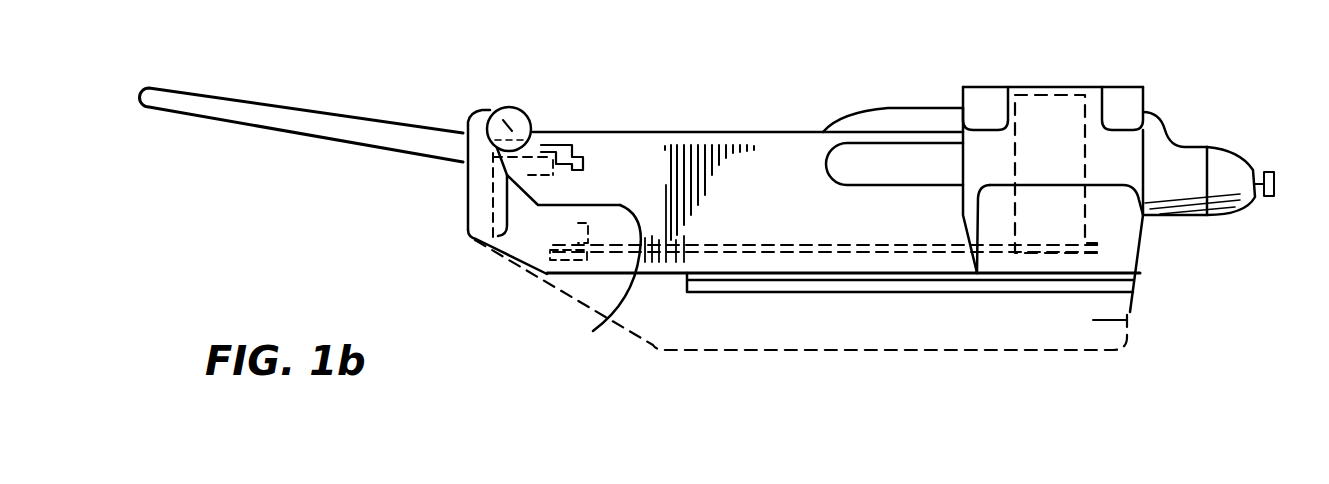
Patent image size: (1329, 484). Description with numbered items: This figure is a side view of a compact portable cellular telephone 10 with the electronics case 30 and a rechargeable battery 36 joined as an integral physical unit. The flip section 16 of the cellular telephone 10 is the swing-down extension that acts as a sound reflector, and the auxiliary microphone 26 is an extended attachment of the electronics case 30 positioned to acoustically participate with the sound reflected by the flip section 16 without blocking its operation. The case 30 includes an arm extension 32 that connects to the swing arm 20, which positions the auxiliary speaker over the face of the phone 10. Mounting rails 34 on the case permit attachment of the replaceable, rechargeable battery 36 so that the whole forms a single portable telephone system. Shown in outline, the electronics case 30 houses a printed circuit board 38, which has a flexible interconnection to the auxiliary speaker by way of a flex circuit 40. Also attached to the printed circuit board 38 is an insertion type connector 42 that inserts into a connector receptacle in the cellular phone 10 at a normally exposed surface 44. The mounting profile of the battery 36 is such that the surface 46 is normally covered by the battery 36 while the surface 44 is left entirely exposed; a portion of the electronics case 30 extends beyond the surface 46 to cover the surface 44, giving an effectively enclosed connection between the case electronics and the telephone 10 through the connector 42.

The cellular telephone 10 is at (1165, 123).
The flip section 16 is at (298, 118).
The swing arm section 20 is at (1117, 98).
The auxiliary microphone 26 is at (480, 190).
The electronics case 30 is at (718, 260).
The arm extension 32 is at (1103, 167).
The mounting rails 34 is at (1137, 288).
The rechargeable battery 36 is at (1093, 320).
The printed circuit board 38 is at (755, 243).
The flex circuit 40 is at (1047, 118).
The insertion type connector 42 is at (558, 150).
The normally exposed surface 44 is at (507, 233).
The surface normally covered by the battery 46 is at (594, 282).